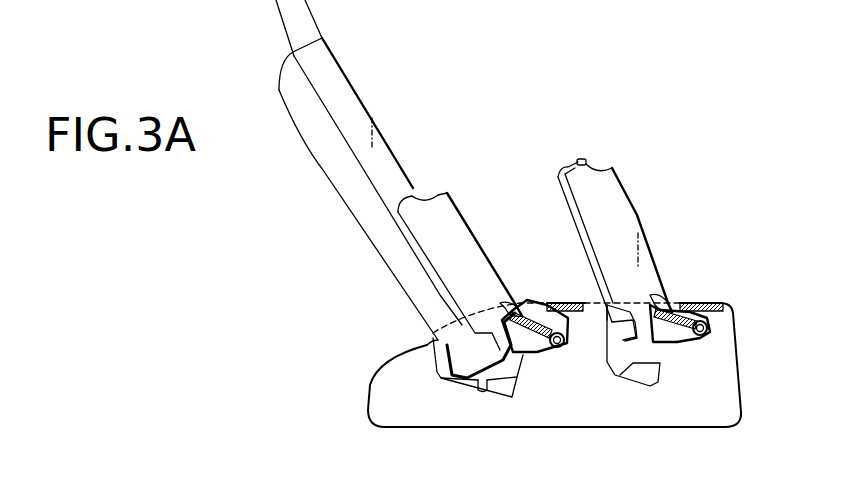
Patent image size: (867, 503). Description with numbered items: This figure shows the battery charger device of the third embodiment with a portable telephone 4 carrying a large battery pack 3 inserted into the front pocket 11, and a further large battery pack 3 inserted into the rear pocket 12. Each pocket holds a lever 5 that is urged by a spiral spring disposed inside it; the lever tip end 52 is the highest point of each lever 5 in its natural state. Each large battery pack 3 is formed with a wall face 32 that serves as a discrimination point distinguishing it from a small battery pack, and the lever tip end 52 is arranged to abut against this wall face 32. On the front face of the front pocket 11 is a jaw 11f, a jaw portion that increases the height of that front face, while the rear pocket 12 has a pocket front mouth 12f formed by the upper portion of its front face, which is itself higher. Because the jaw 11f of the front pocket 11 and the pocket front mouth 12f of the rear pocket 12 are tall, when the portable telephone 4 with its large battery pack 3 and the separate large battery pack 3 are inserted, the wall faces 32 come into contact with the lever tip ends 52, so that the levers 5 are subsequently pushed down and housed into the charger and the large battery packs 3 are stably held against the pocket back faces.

The large battery pack 3 is at (440, 200).
The portable telephone 4 is at (344, 96).
The lever 5 is at (537, 347).
The front pocket 11 is at (457, 400).
The jaw 11f is at (430, 347).
The rear pocket 12 is at (617, 400).
The pocket front mouth 12f is at (607, 298).
The wall face 32 is at (498, 303).
The lever tip end 52 is at (532, 307).